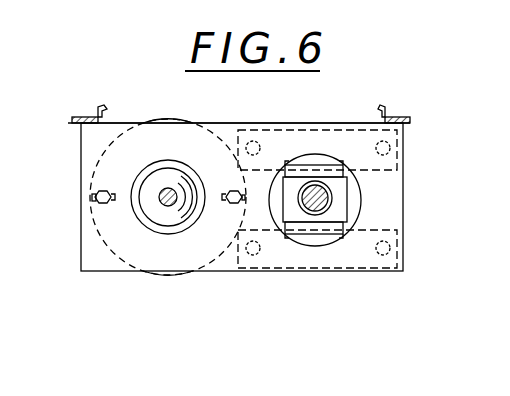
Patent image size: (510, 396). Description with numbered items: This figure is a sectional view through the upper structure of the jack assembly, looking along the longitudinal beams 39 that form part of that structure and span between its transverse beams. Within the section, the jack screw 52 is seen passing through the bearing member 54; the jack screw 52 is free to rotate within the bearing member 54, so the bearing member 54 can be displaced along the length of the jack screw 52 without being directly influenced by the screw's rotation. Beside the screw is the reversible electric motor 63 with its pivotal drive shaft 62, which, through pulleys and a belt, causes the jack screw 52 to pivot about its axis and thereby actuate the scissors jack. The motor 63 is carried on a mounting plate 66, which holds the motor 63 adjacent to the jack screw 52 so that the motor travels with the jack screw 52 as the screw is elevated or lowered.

The longitudinal beam 39 is at (83, 117).
The jack screw 52 is at (317, 190).
The bearing member 54 is at (348, 208).
The drive shaft 62 is at (164, 204).
The reversible electric motor 63 is at (187, 123).
The mounting plate 66 is at (185, 258).